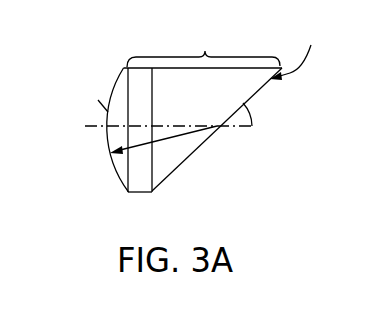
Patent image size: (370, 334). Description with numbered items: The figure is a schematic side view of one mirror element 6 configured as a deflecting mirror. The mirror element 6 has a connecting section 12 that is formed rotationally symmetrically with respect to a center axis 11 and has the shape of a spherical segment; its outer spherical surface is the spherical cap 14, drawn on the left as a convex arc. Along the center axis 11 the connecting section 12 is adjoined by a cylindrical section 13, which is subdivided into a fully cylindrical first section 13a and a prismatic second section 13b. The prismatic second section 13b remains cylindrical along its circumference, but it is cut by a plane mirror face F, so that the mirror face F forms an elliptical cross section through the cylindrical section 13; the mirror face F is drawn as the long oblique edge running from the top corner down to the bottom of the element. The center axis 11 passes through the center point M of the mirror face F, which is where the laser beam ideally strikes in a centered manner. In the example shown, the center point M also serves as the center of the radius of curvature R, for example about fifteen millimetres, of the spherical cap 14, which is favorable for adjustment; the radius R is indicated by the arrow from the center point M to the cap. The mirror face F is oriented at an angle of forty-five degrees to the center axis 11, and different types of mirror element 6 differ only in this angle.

The mirror element 6 is at (181, 118).
The center axis 11 is at (92, 128).
The connecting section 12 is at (117, 91).
The cylindrical section 13 is at (203, 109).
The first section 13a is at (138, 178).
The second section 13b is at (232, 85).
The spherical cap 14 is at (107, 110).
The mirror face F is at (294, 51).
The radius of curvature R is at (173, 140).
The center point M is at (221, 128).